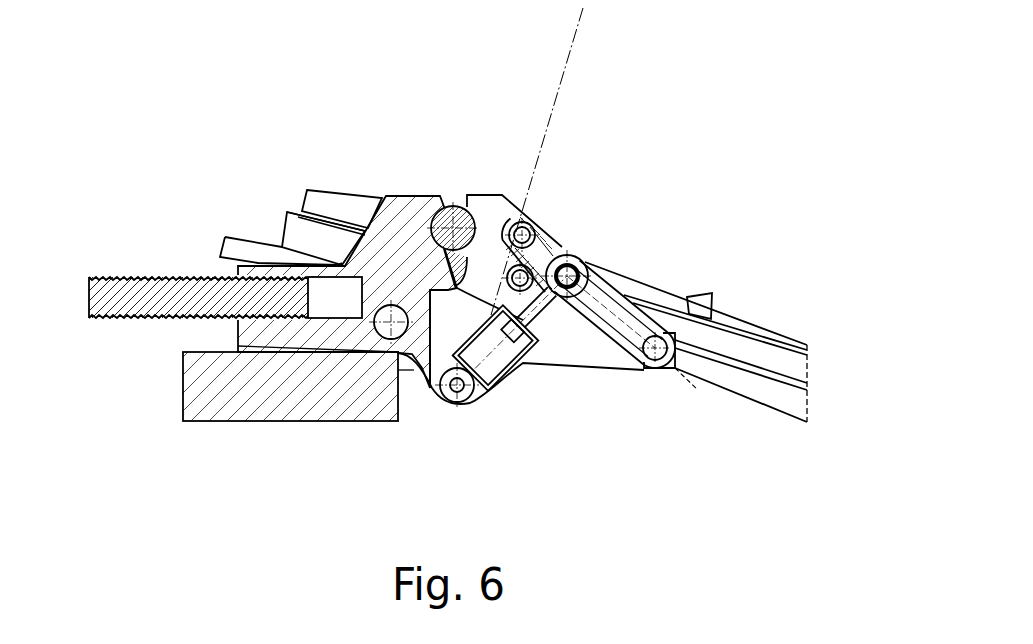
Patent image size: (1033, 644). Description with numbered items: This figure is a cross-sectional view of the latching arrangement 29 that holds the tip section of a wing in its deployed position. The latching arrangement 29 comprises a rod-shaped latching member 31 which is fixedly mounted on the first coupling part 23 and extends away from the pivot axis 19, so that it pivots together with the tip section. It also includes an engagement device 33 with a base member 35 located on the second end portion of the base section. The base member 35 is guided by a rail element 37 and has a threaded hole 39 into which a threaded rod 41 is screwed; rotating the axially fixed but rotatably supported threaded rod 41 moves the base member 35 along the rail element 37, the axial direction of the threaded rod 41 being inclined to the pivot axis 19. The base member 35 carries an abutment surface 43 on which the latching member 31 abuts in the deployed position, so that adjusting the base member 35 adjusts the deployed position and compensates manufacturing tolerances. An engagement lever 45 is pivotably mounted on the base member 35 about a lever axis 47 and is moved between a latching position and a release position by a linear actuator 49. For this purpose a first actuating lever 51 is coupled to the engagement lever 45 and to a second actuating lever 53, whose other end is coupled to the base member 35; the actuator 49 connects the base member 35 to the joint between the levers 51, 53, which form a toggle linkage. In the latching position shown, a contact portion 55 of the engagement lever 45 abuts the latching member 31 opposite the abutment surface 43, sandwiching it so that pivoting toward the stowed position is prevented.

The pivot axis 19 is at (575, 40).
The first coupling part 23 is at (688, 303).
The latching arrangement 29 is at (342, 170).
The latching member 31 is at (447, 225).
The engagement device 33 is at (457, 418).
The base member 35 is at (419, 273).
The rail element 37 is at (282, 397).
The threaded hole 39 is at (328, 296).
The threaded rod 41 is at (153, 298).
The abutment surface 43 is at (430, 228).
The engagement lever 45 is at (483, 243).
The lever axis 47 is at (391, 340).
The actuator 49 is at (505, 365).
The first actuating lever 51 is at (548, 224).
The second actuating lever 53 is at (607, 332).
The contact portion 55 is at (483, 228).